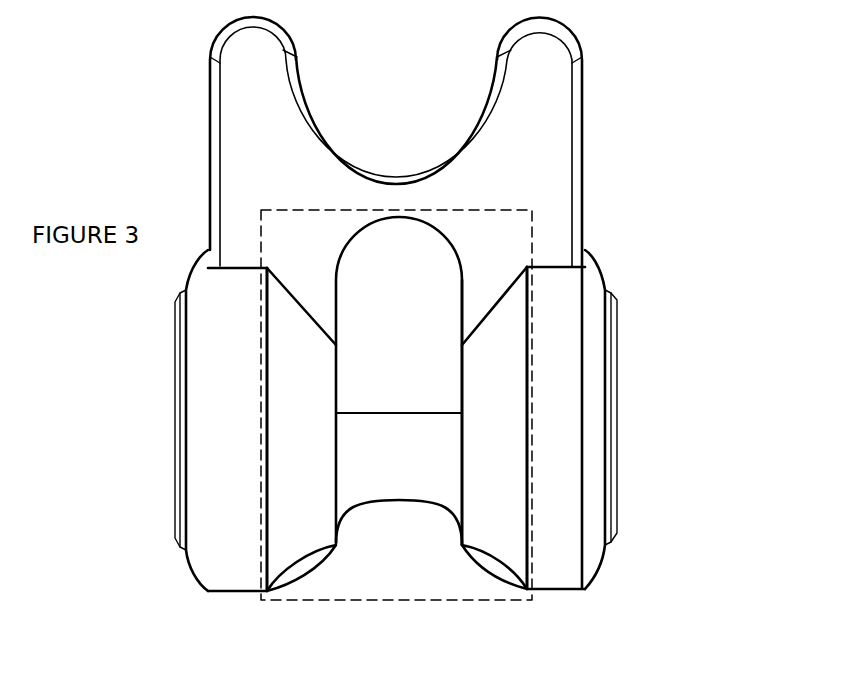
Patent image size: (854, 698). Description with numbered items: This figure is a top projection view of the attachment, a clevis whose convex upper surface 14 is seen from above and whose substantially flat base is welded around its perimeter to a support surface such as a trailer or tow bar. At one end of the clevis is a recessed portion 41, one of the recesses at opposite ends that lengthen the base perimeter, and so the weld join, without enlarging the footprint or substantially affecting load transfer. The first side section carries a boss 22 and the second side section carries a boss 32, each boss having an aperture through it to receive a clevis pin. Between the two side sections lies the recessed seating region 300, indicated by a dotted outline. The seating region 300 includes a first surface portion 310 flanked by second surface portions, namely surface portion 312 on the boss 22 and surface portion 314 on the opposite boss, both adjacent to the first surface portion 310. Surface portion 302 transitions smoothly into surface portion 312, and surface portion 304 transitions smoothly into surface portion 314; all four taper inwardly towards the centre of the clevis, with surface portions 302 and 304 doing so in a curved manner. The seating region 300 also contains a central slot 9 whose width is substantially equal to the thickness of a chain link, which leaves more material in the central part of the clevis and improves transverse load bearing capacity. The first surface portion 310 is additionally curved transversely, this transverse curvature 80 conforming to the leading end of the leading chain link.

The convex upper surface 14 is at (237, 77).
The transverse curvature 80 is at (397, 217).
The seating region 300 is at (513, 208).
The central slot 9 is at (438, 333).
The boss 32 is at (233, 480).
The boss 22 is at (562, 470).
The surface portion 312 is at (495, 478).
The surface portion 314 is at (302, 493).
The surface portion 304 is at (303, 557).
The recessed portion 41 is at (403, 538).
The first surface portion 310 is at (398, 385).
The surface portion 302 is at (495, 565).